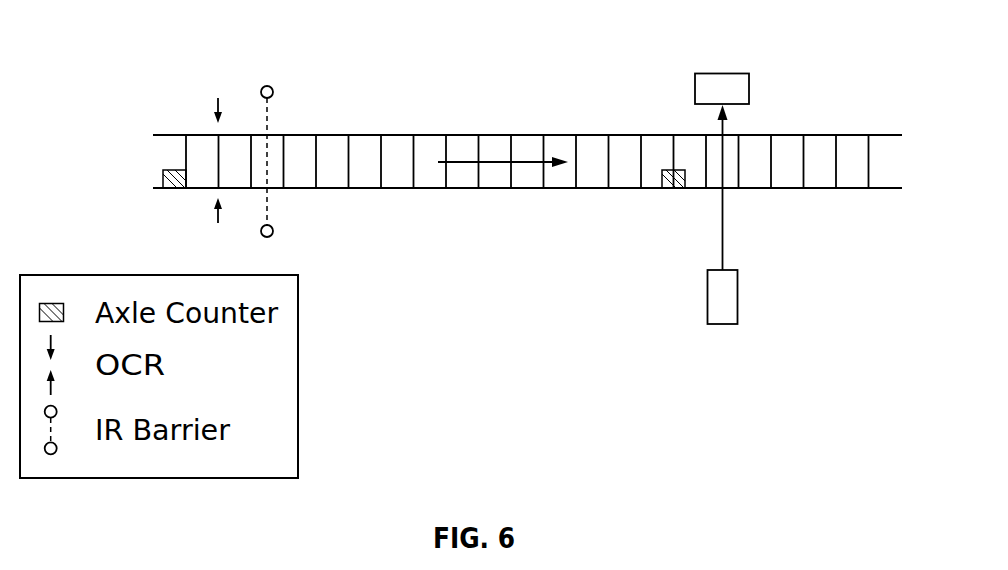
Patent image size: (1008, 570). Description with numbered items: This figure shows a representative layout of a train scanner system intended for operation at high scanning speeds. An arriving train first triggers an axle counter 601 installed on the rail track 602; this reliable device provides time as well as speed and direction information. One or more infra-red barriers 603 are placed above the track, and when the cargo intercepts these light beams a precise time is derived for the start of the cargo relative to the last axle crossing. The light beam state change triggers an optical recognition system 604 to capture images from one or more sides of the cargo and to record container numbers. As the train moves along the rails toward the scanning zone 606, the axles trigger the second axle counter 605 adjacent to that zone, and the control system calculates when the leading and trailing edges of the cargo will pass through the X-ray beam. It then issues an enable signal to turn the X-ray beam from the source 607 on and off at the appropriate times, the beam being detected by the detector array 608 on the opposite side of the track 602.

The axle counter 601 is at (172, 184).
The rail track 602 is at (330, 155).
The infra-red barrier 603 is at (273, 231).
The optical recognition system 604 is at (216, 108).
The second axle counter 605 is at (677, 190).
The scanning zone 606 is at (723, 222).
The source 607 is at (738, 293).
The detector array 608 is at (749, 88).